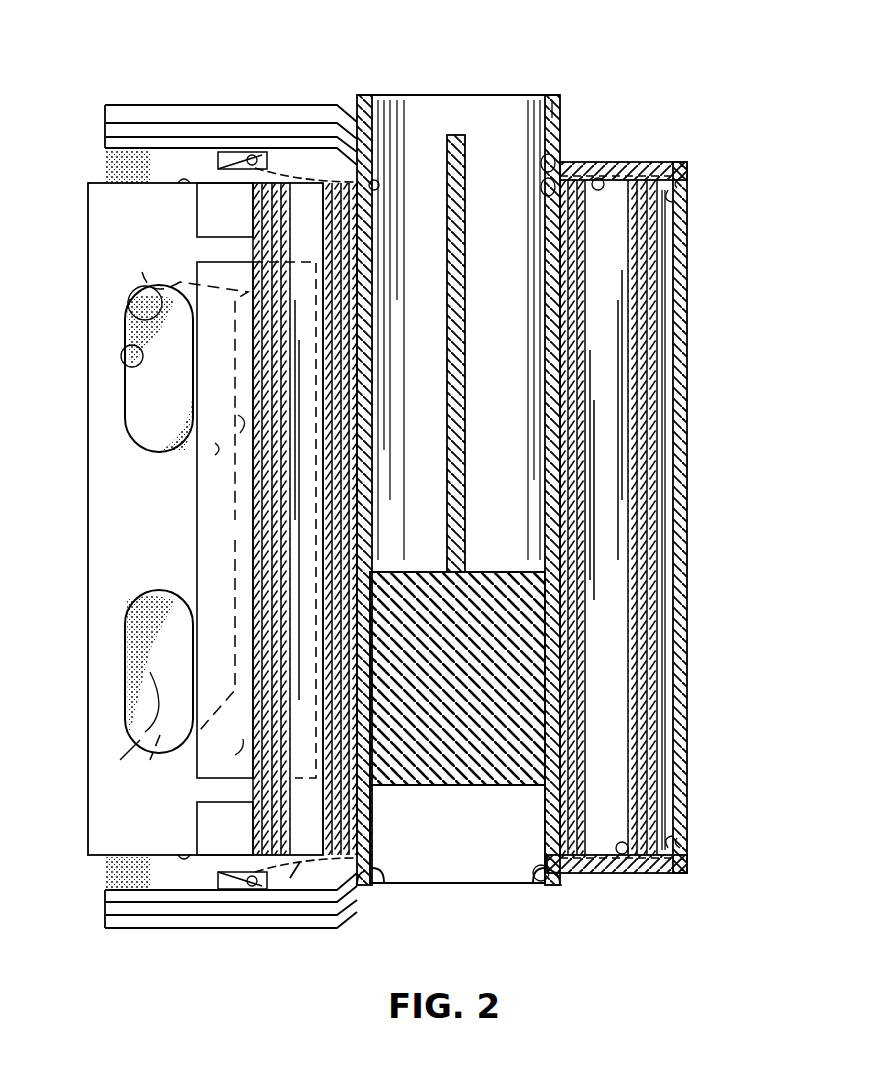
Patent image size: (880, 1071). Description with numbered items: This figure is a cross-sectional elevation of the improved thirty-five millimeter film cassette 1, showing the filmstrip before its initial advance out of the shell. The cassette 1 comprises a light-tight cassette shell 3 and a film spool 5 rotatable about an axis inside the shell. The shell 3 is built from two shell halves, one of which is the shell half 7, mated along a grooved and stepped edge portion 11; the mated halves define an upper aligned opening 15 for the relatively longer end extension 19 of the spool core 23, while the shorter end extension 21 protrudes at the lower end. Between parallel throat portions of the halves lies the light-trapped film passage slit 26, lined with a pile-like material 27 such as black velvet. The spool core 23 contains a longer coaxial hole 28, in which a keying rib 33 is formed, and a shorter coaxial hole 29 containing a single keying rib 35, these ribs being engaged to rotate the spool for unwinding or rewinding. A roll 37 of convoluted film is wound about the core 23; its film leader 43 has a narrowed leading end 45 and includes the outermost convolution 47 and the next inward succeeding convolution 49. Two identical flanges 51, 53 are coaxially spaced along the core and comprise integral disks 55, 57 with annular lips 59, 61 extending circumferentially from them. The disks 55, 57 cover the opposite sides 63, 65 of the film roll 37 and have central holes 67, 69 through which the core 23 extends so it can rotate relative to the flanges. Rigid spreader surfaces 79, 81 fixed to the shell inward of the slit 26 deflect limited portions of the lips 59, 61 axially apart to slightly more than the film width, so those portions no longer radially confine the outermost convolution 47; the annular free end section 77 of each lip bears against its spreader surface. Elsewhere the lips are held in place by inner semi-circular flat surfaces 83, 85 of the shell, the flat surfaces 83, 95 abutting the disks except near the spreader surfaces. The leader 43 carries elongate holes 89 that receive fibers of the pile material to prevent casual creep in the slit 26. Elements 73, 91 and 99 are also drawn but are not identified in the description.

The film cassette 1 is at (185, 88).
The cassette shell 3 is at (694, 805).
The film spool 5 is at (663, 632).
The shell half 7 is at (237, 105).
The grooved and stepped edge portion 11 is at (110, 130).
The upper aligned opening 15 is at (553, 160).
The longer end extension 19 is at (562, 110).
The shorter end extension 21 is at (560, 885).
The spool core 23 is at (500, 578).
The film passage slit 26 is at (105, 872).
The pile-like material 27 is at (158, 292).
The longer coaxial hole 28 is at (430, 95).
The shorter coaxial hole 29 is at (432, 885).
The keying rib 33 is at (466, 165).
The keying rib 35 is at (492, 787).
The film roll 37 is at (250, 510).
The film leader 43 is at (88, 527).
The narrowed leading end 45 is at (82, 400).
The outermost convolution 47 is at (265, 572).
The next inward succeeding convolution 49 is at (282, 532).
The flange 51 is at (262, 152).
The flange 53 is at (250, 882).
The disk 55 is at (303, 178).
The disk 57 is at (300, 880).
The annular lip 59 is at (216, 162).
The annular lip 61 is at (210, 876).
The side of film roll 63 is at (280, 185).
The side of film roll 65 is at (292, 857).
The central hole 67 is at (379, 188).
The central hole 69 is at (365, 887).
The housing inner wall 73 is at (664, 500).
The annular free end section 77 is at (236, 185).
The spreader surface 79 is at (190, 185).
The spreader surface 81 is at (190, 855).
The inner semi-circular flat surface 83 is at (622, 165).
The inner semi-circular flat surface 85 is at (612, 870).
The elongate holes 89 is at (128, 355).
The frame 91 is at (197, 490).
The flat surface 95 is at (250, 606).
The connector 99 is at (217, 448).